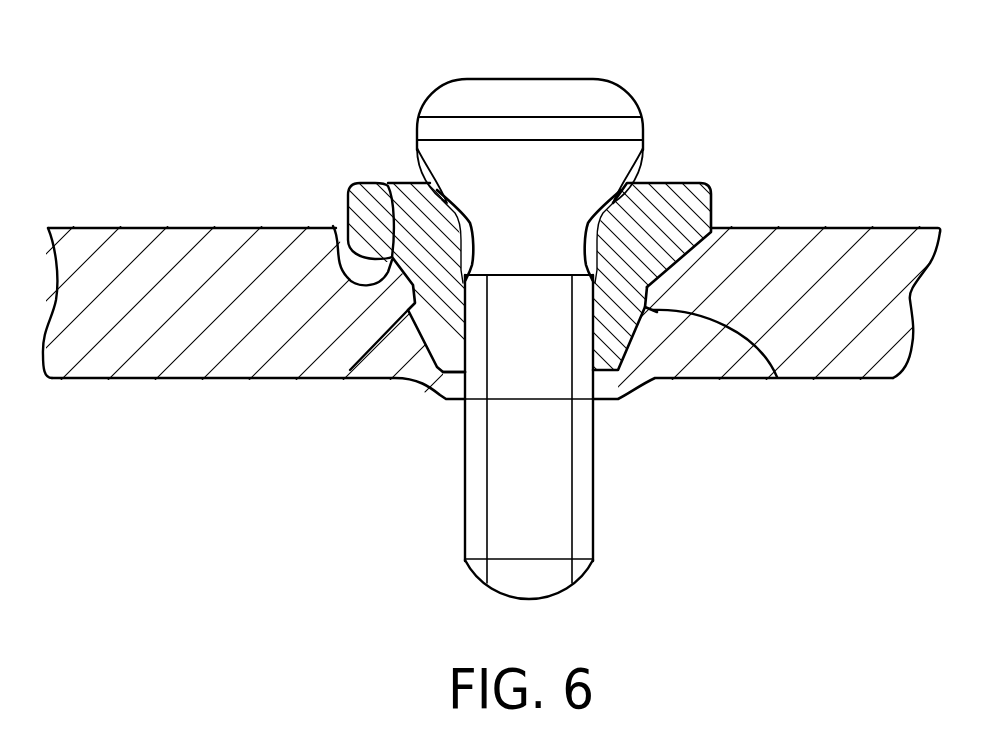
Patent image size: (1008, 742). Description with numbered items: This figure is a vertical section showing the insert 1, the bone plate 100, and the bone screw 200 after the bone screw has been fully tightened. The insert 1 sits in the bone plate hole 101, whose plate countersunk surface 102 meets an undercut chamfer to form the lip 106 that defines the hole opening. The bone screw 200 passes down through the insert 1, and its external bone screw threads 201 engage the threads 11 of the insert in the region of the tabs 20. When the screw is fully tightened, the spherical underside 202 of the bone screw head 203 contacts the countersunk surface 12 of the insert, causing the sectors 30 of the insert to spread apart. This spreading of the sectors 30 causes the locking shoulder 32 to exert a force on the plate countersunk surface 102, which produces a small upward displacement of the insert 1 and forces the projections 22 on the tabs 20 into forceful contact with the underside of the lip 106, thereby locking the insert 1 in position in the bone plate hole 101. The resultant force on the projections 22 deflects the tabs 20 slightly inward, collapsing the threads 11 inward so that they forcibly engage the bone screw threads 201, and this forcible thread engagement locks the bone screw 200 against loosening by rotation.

The insert 1 is at (387, 140).
The threads 11 is at (593, 327).
The countersunk surface 12 is at (643, 150).
The tabs 20 is at (623, 337).
The tab projections 22 is at (655, 317).
The sectors 30 is at (684, 210).
The locking shoulder 32 is at (374, 183).
The bone plate 100 is at (210, 379).
The bone plate hole 101 is at (419, 407).
The plate countersunk surface 102 is at (333, 226).
The lip 106 is at (777, 377).
The bone screw 200 is at (436, 507).
The external bone screw threads 201 is at (594, 531).
The spherical underside 202 is at (639, 165).
The bone screw head 203 is at (493, 79).